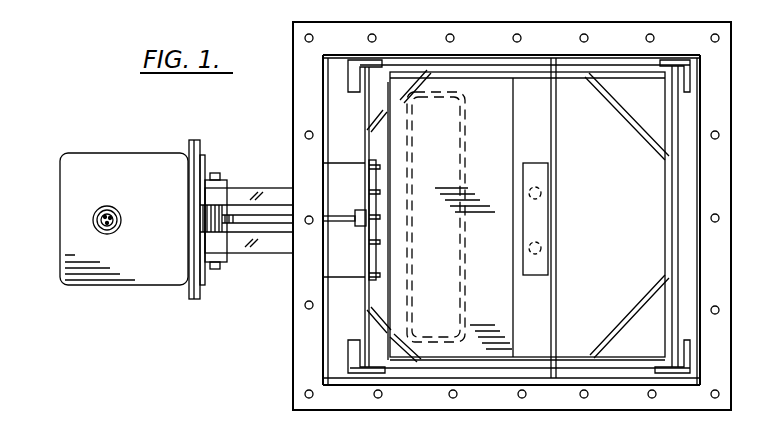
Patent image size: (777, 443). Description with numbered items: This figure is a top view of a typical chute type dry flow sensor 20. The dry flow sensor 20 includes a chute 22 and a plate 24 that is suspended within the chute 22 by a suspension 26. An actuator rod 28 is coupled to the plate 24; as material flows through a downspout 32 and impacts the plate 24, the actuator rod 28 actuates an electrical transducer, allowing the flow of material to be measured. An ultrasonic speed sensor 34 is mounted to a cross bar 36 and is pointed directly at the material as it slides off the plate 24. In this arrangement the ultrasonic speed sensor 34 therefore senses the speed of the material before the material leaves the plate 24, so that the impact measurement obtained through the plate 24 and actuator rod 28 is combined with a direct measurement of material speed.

The dry flow sensor 20 is at (222, 338).
The chute 22 is at (298, 112).
The plate 24 is at (498, 148).
The suspension 26 is at (602, 68).
The actuator rod 28 is at (342, 222).
The downspout 32 is at (468, 243).
The ultrasonic speed sensor 34 is at (546, 213).
The cross bar 36 is at (556, 289).